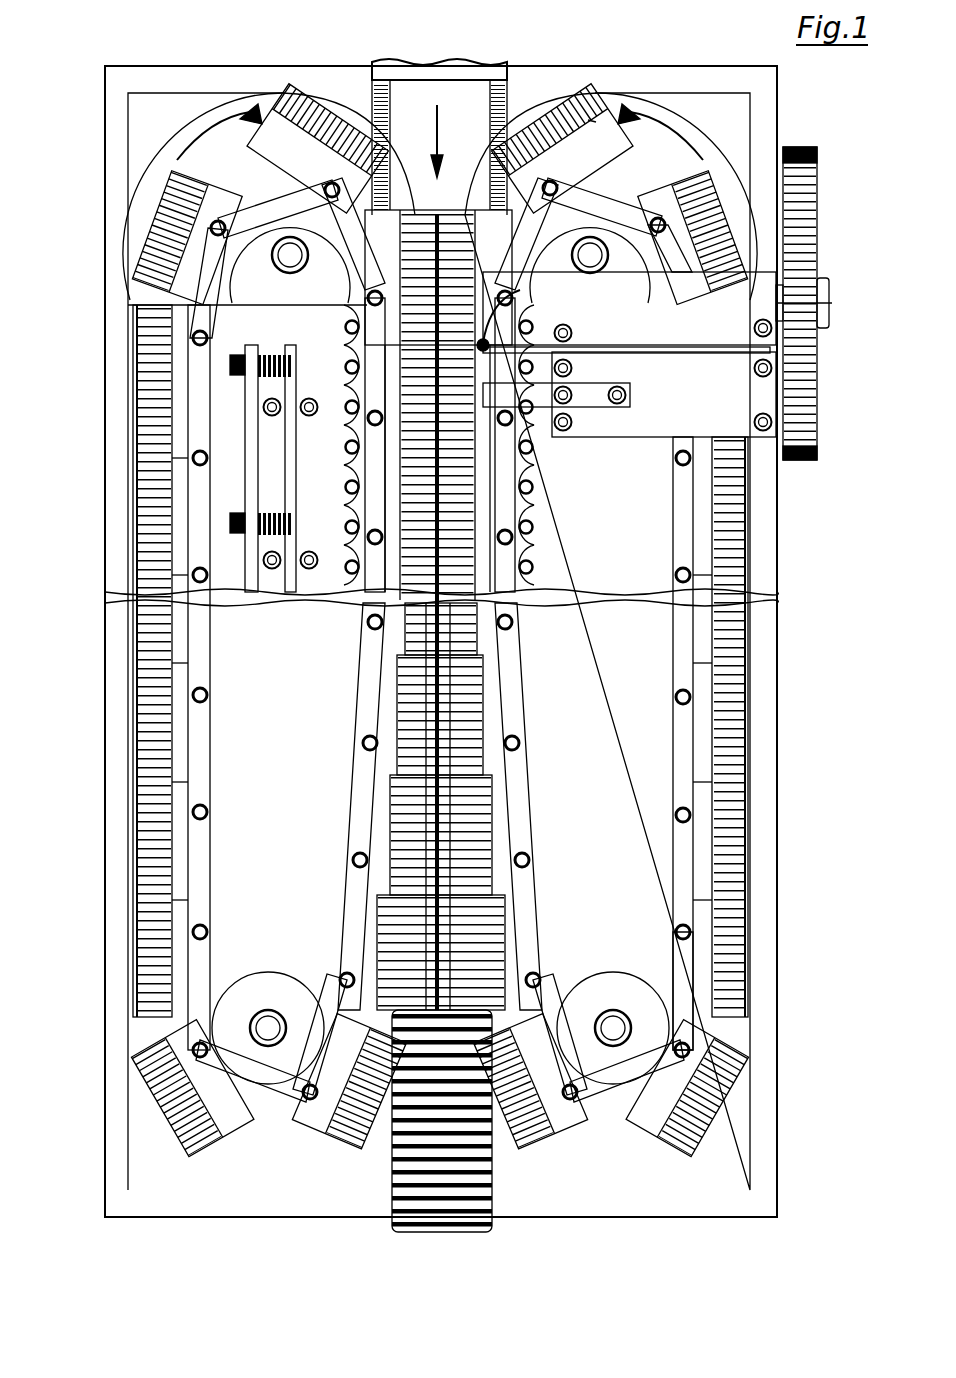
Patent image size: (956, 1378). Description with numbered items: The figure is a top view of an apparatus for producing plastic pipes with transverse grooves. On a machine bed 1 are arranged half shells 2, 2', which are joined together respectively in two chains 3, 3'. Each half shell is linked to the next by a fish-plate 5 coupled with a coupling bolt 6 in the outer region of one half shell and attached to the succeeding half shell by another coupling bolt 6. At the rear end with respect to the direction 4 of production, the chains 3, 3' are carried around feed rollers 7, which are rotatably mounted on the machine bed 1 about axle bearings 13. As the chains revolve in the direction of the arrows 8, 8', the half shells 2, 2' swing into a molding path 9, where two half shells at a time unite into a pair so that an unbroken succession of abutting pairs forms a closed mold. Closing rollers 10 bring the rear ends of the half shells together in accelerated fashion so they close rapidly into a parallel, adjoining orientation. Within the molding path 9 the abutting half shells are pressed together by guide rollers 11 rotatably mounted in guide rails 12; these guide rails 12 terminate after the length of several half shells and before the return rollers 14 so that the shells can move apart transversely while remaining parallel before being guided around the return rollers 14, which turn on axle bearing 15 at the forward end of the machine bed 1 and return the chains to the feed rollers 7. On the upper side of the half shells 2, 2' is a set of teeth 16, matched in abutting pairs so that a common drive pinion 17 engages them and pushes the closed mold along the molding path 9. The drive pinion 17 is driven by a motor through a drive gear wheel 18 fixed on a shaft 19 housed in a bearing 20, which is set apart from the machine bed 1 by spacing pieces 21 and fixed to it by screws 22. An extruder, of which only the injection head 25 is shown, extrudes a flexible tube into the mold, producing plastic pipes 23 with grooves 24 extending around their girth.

The machine bed 1 is at (718, 92).
The half shell 2 is at (562, 106).
The half shell 2' is at (295, 106).
The chain 3 is at (754, 195).
The chain 3' is at (145, 227).
The direction of production 4 is at (442, 130).
The fish-plate 5 is at (682, 890).
The coupling bolt 6 is at (690, 816).
The feed roller 7 is at (200, 305).
The arrow 8 is at (599, 152).
The arrow 8' is at (197, 80).
The molding path 9 is at (672, 676).
The closing roller 10 is at (537, 90).
The guide roller 11 is at (250, 438).
The guide rail 12 is at (122, 378).
The axle bearing 13 is at (232, 254).
The return roller 14 is at (262, 985).
The axle bearing 15 is at (262, 1025).
The set of teeth 16 is at (746, 772).
The drive pinion 17 is at (350, 60).
The drive gear wheel 18 is at (818, 180).
The shaft 19 is at (832, 303).
The bearing 20 is at (758, 318).
The spacing piece 21 is at (612, 470).
The screw 22 is at (770, 420).
The plastic pipe 23 is at (492, 1200).
The groove 24 is at (392, 1160).
The injection head 25 is at (420, 75).